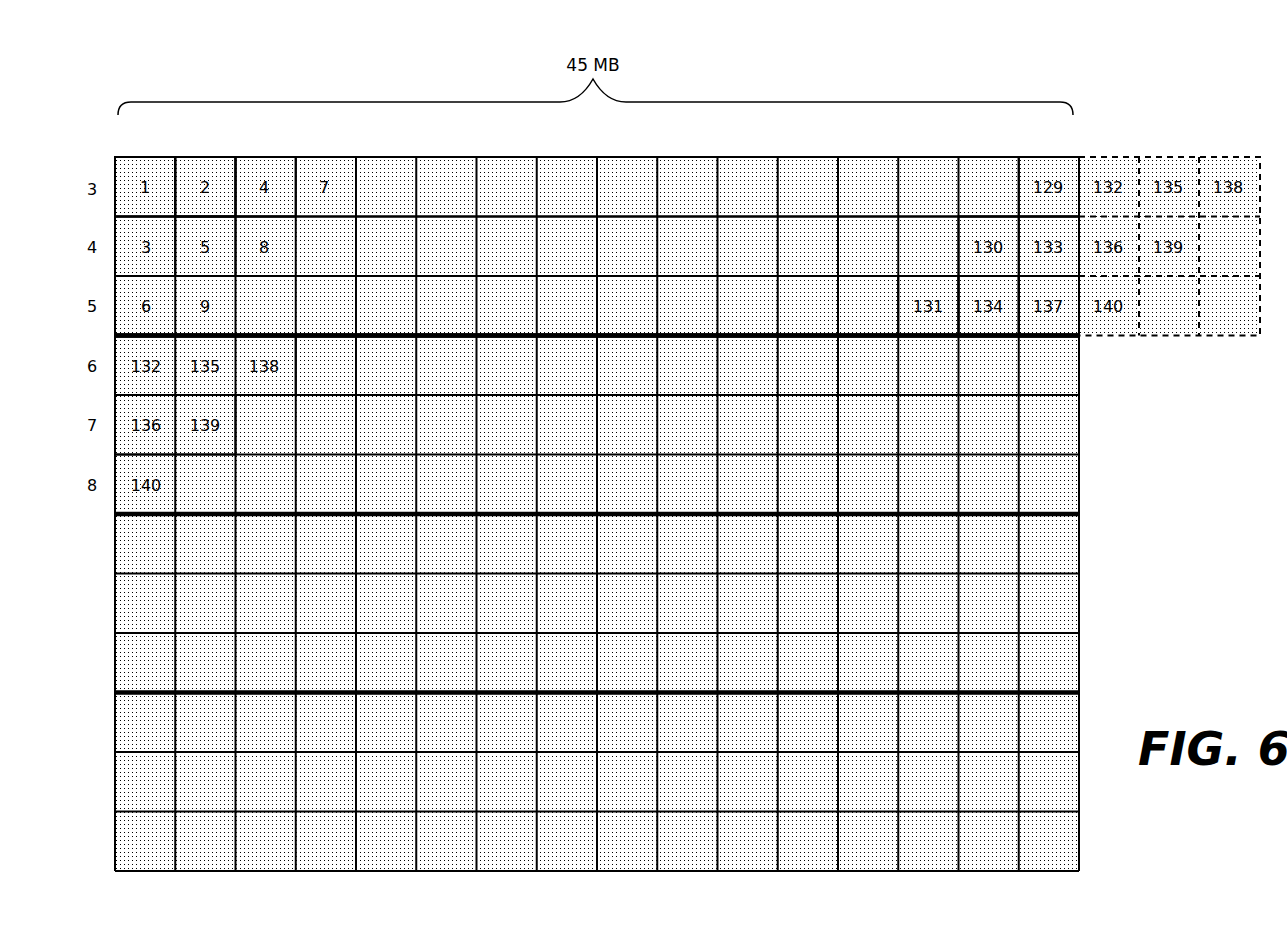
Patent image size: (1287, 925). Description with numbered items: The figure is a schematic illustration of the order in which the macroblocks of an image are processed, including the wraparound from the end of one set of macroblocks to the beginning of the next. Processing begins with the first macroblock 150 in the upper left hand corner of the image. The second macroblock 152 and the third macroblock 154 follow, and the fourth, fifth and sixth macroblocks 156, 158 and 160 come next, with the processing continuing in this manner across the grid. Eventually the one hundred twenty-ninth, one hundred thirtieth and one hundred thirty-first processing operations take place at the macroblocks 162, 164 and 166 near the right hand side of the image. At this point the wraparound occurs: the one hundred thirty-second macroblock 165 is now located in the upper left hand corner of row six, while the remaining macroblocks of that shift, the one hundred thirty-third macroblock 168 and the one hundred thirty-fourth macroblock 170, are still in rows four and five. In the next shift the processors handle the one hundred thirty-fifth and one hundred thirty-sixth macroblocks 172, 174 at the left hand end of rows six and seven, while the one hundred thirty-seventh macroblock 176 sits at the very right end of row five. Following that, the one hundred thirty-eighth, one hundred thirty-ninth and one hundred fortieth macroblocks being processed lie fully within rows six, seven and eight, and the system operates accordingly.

The first macroblock 150 is at (158, 165).
The second macroblock 152 is at (220, 165).
The third macroblock 154 is at (124, 229).
The fourth macroblock 156 is at (278, 165).
The fifth macroblock 158 is at (223, 233).
The sixth macroblock 160 is at (128, 296).
The one hundred twenty-ninth macroblock 162 is at (1043, 165).
The one hundred thirtieth macroblock 164 is at (983, 227).
The one hundred thirty-second macroblock 165 is at (128, 351).
The one hundred thirty-first macroblock 166 is at (927, 280).
The one hundred thirty-third macroblock 168 is at (1070, 228).
The one hundred thirty-fourth macroblock 170 is at (1002, 317).
The one hundred thirty-fifth macroblock 172 is at (190, 385).
The one hundred thirty-sixth macroblock 174 is at (122, 440).
The one hundred thirty-seventh macroblock 176 is at (1057, 317).